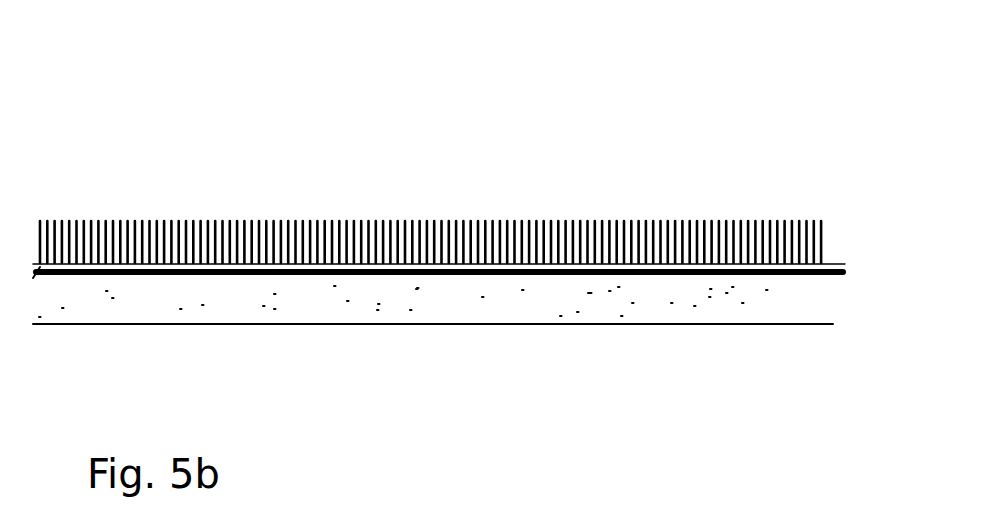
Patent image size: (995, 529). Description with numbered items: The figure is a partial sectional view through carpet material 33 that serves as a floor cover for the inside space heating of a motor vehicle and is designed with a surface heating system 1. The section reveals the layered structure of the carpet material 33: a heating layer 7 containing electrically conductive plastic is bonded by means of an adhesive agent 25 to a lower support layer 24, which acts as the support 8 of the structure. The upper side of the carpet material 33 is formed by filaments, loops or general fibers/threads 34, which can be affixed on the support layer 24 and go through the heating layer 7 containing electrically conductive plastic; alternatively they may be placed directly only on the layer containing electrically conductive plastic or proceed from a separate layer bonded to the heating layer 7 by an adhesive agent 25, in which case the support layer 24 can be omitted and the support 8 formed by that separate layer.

The surface heating system 1 is at (170, 180).
The fibers/threads 34 is at (358, 236).
The carpet material 33 is at (713, 186).
The heating layer 7 is at (848, 269).
The adhesive agent 25 is at (858, 280).
The support layer 24 is at (455, 325).
The support 8 is at (642, 336).